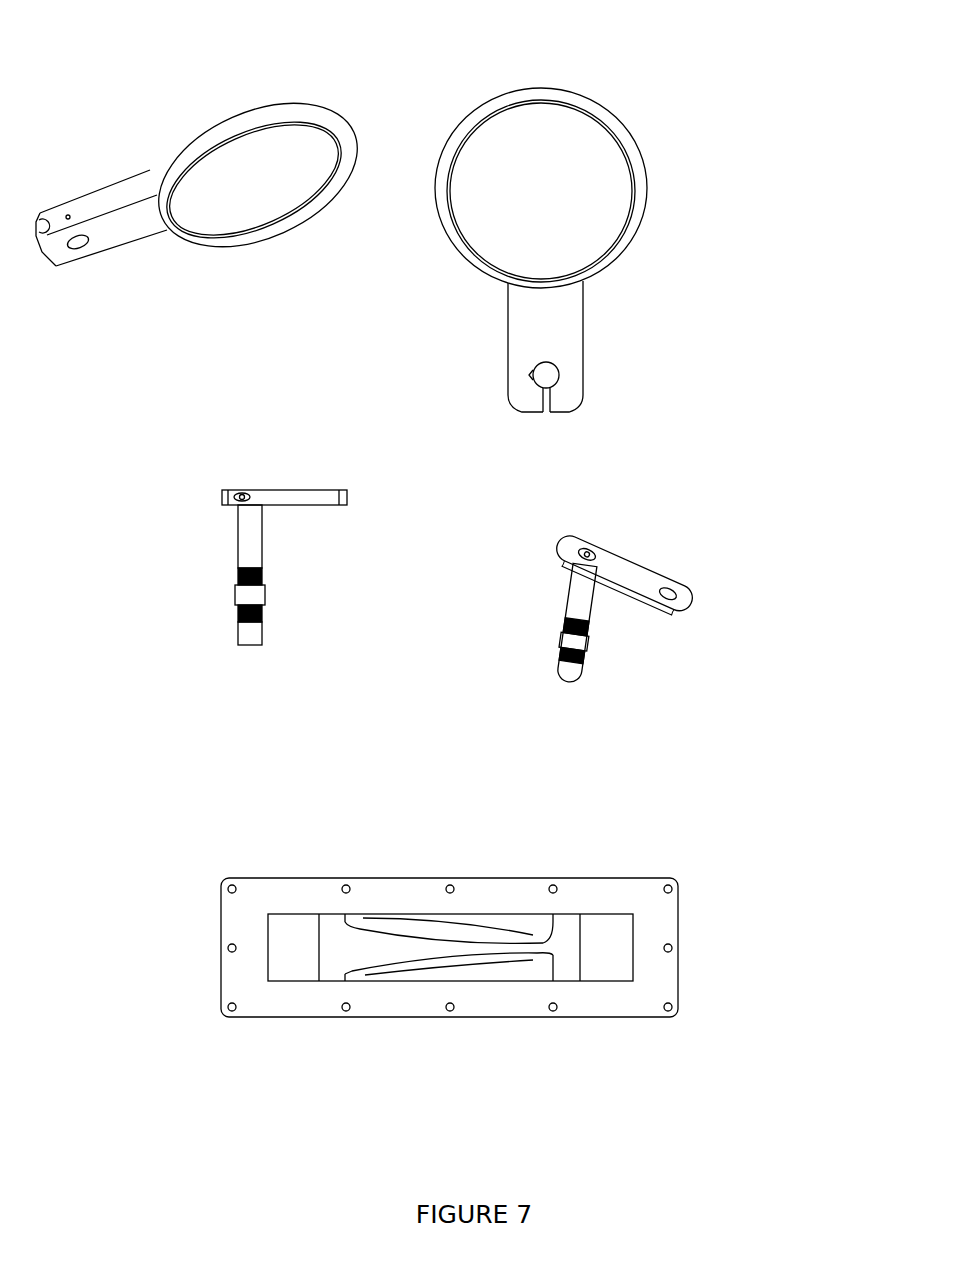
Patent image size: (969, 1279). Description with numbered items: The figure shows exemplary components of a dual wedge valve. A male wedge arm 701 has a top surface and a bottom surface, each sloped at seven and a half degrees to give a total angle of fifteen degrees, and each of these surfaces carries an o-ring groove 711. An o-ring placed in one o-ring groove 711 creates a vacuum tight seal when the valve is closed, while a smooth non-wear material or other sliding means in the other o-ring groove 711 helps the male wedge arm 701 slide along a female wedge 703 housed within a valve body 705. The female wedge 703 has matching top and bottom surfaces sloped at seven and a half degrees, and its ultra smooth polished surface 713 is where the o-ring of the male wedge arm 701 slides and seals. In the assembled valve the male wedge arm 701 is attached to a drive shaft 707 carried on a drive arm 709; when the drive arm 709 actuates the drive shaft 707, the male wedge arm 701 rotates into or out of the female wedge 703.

The male wedge arm 701 is at (122, 228).
The o-ring groove 711 is at (347, 135).
The drive arm 709 is at (630, 573).
The drive shaft 707 is at (582, 599).
The valve body 705 is at (407, 878).
The female wedge 703 is at (360, 922).
The polished surface 713 is at (543, 957).